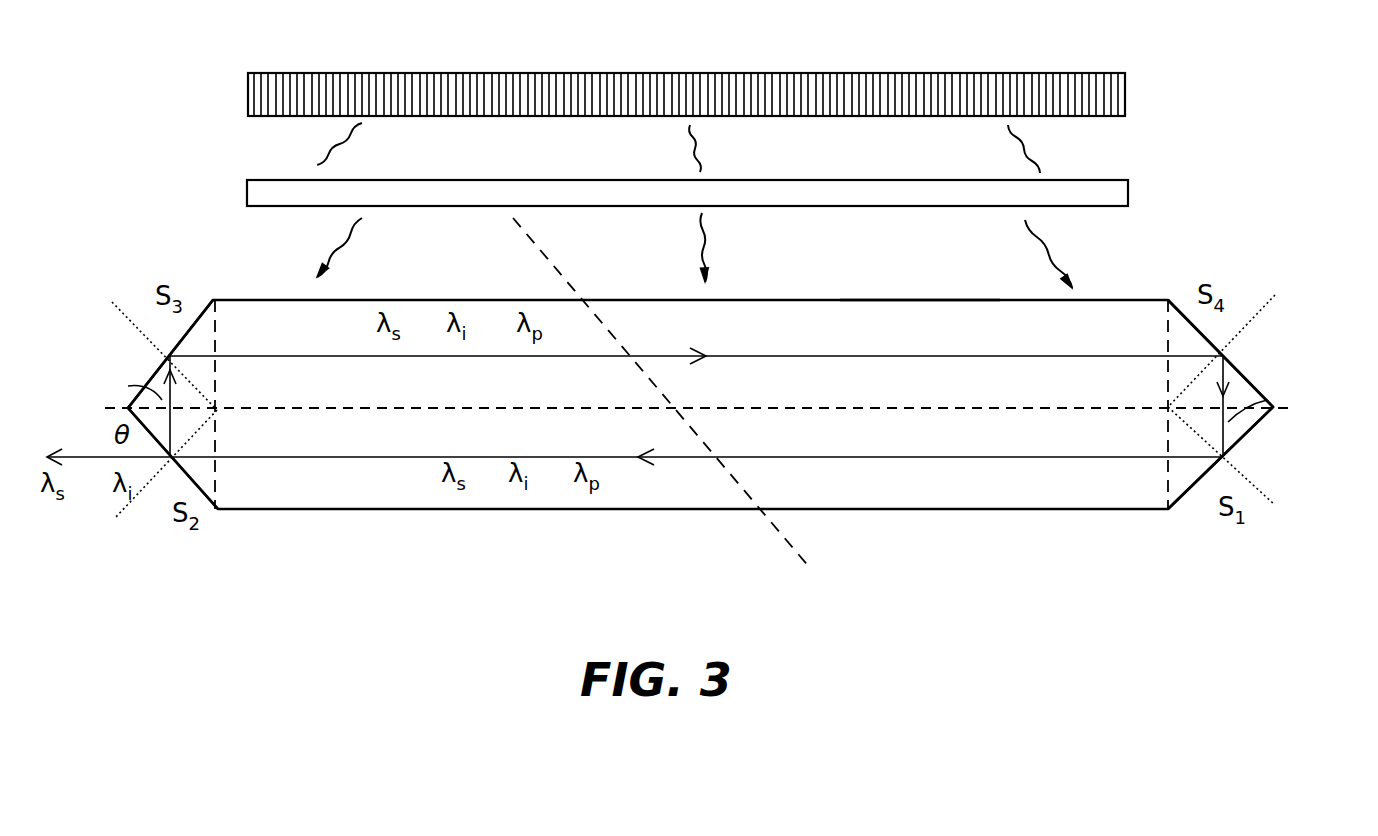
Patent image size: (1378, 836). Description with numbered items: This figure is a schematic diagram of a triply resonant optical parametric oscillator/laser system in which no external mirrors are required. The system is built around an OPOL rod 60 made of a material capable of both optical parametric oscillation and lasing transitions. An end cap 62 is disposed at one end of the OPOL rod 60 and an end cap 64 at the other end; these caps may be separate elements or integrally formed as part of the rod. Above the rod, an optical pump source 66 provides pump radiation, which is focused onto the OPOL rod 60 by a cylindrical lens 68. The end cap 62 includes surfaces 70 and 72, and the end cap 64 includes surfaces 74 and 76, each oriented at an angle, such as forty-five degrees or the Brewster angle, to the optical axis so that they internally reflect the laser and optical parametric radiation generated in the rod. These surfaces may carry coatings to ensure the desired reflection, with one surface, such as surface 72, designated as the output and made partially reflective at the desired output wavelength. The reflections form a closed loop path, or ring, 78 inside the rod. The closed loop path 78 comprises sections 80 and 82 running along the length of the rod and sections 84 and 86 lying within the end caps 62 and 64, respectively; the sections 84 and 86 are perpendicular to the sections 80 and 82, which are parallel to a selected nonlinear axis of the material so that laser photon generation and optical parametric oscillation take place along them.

The OPOL rod 60 is at (672, 510).
The end cap 62 is at (129, 303).
The end cap 64 is at (1256, 311).
The optical pump source 66 is at (1020, 72).
The cylindrical lens 68 is at (1130, 191).
The surface 70 is at (146, 378).
The surface 72 is at (182, 478).
The surface 74 is at (1252, 385).
The surface 76 is at (1250, 434).
The closed loop path 78 is at (955, 355).
The section 80 is at (876, 356).
The section 82 is at (995, 455).
The section 84 is at (128, 386).
The section 86 is at (1267, 400).